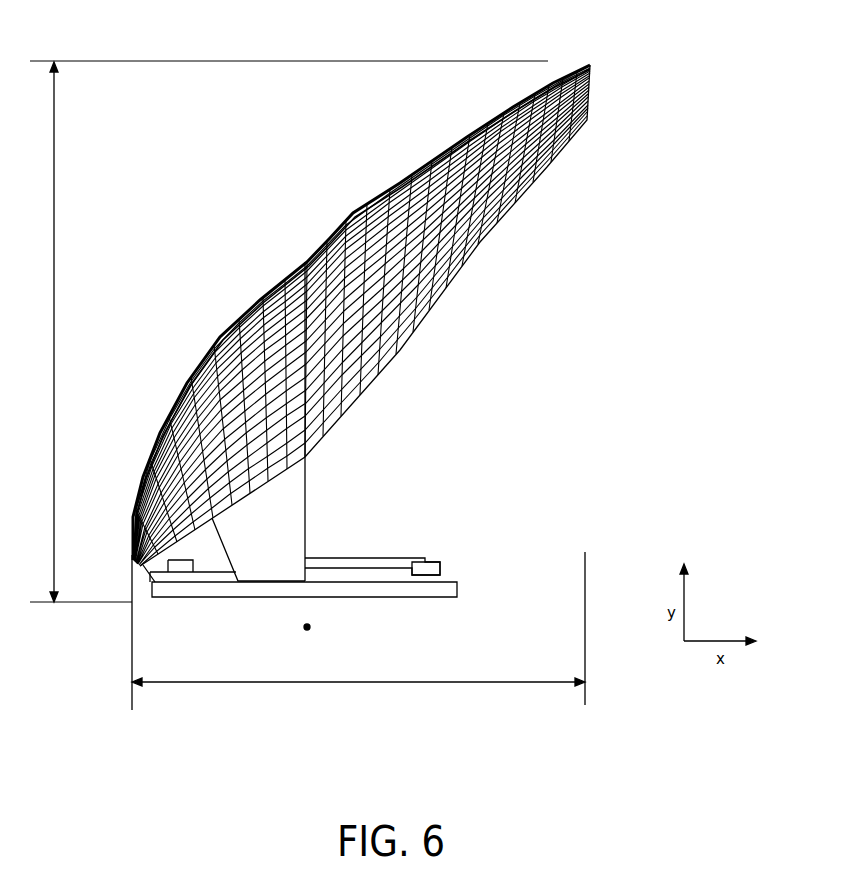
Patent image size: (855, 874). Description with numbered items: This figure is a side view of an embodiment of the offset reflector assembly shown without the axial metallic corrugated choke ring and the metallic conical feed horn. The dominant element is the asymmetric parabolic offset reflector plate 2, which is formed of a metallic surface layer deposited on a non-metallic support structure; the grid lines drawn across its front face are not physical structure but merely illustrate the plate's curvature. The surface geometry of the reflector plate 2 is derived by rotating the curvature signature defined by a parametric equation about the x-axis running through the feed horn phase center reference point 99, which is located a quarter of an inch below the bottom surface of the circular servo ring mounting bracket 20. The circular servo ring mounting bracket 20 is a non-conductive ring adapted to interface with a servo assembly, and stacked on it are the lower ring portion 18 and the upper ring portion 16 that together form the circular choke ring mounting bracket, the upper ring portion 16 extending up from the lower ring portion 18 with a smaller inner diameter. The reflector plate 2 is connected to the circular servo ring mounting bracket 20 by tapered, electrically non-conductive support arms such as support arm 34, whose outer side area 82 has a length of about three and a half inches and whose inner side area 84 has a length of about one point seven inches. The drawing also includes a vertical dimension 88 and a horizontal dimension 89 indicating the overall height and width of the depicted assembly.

The asymmetric offset reflector plate 2 is at (592, 66).
The upper ring portion 16 is at (421, 556).
The lower ring portion 18 is at (438, 576).
The circular servo ring mounting bracket 20 is at (202, 598).
The support arm 34 is at (265, 543).
The outer side area of support arms 82 is at (307, 522).
The inner side area of support arms 84 is at (222, 548).
The height dimension 88 is at (54, 272).
The width dimension 89 is at (294, 683).
The feed horn phase center reference point 99 is at (304, 627).